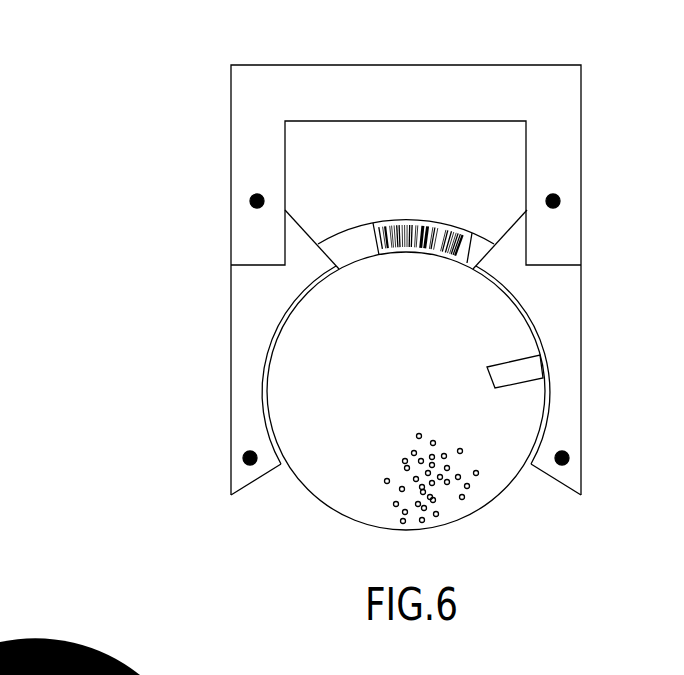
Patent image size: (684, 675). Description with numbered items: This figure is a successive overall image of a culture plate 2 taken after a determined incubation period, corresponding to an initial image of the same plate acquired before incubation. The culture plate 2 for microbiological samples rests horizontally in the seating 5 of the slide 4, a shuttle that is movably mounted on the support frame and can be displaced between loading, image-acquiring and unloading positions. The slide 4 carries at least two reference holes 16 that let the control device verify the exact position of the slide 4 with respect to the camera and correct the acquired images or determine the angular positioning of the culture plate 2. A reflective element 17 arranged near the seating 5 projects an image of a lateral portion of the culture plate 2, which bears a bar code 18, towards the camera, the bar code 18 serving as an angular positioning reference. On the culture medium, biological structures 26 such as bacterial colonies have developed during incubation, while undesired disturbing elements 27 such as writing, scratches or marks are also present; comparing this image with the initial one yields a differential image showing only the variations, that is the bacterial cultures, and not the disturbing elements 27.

The slide 4 is at (601, 58).
The culture plate 2 is at (302, 502).
The seating 5 is at (275, 337).
The reference holes 16 is at (257, 201).
The reflective element 17 is at (343, 252).
The bar code 18 is at (473, 232).
The biological structures 26 is at (448, 496).
The undesired disturbing elements 27 is at (356, 411).